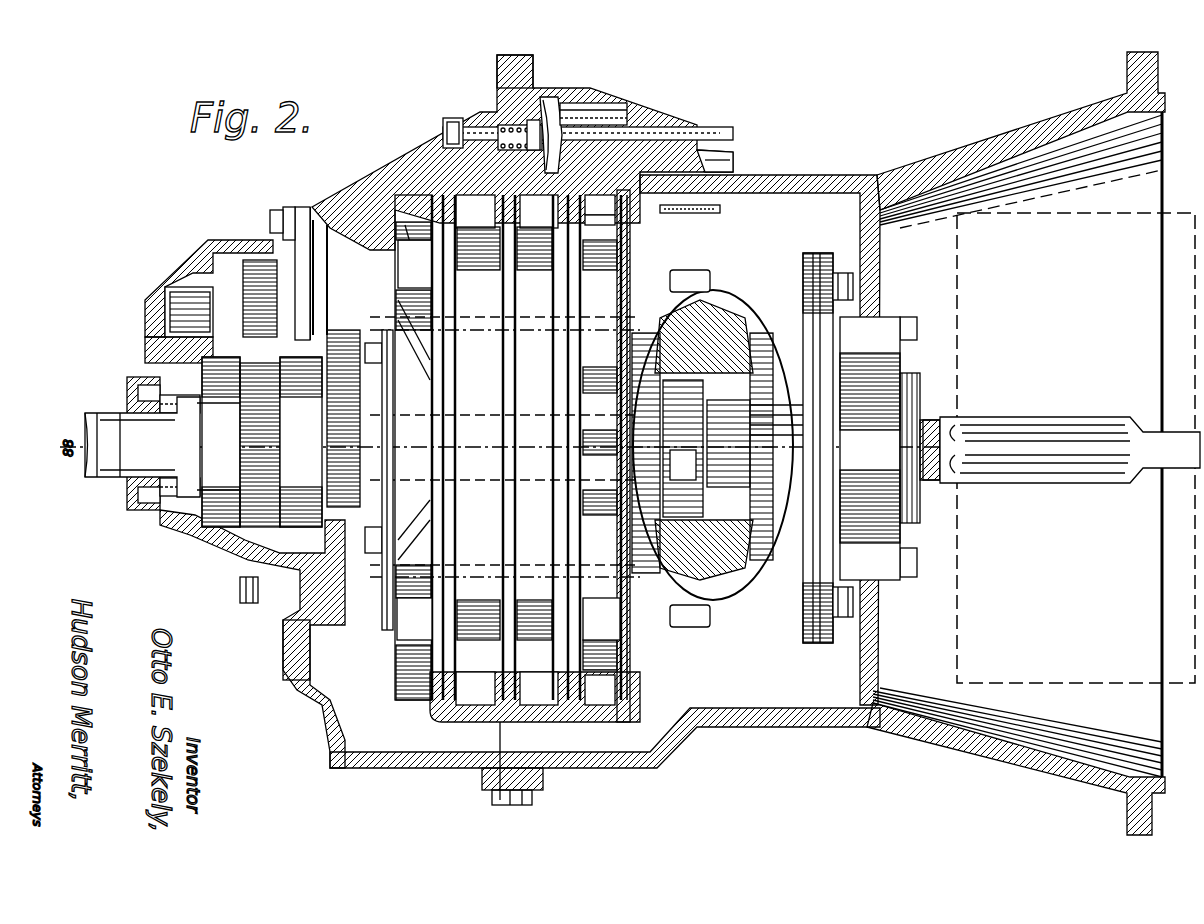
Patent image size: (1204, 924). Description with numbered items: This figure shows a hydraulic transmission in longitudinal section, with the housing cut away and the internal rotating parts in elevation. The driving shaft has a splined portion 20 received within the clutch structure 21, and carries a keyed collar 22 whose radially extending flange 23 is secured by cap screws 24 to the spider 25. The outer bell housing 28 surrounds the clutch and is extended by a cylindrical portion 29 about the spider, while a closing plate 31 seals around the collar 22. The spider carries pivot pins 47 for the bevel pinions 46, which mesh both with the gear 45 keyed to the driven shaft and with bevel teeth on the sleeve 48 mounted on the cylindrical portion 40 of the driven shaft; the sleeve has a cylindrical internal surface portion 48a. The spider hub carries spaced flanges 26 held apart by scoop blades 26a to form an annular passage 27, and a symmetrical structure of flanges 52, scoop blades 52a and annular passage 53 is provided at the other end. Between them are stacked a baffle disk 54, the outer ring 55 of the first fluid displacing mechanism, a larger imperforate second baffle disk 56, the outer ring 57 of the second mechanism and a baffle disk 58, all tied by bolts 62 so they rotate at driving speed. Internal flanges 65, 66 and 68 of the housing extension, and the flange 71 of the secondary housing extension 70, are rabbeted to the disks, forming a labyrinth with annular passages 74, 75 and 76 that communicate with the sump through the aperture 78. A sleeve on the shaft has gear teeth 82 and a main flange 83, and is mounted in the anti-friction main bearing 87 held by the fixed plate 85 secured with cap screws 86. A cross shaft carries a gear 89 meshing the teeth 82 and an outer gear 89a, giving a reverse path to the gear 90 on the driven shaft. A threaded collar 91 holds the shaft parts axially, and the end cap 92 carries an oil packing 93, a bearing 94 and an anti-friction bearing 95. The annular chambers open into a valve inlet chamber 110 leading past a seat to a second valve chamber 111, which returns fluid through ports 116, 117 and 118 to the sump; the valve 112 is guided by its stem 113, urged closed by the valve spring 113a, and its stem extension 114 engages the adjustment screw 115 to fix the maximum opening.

The splined portion 20 is at (1070, 428).
The clutch structure 21 is at (1058, 213).
The collar 22 is at (935, 420).
The radially extending flange 23 is at (815, 252).
The cap screws 24 is at (854, 287).
The spider 25 is at (802, 285).
The radially extending flanges 26 is at (586, 412).
The scoop blades 26a is at (632, 265).
The annular passage 27 is at (601, 619).
The bell housing 28 is at (1000, 145).
The cylindrical portion 29 is at (800, 176).
The closing plate 31 is at (905, 375).
The cylindrical portion 40 is at (142, 447).
The gear 45 is at (745, 445).
The bevel pinions 46 is at (705, 368).
The pivot pins 47 is at (690, 272).
The sleeve 48 is at (683, 448).
The cylindrical internal surface portion 48a is at (688, 452).
The radially extending flanges 52 is at (400, 230).
The scoop blades 52a is at (457, 325).
The annular passage 53 is at (414, 619).
The baffle disk 54 is at (565, 358).
The outer ring 55 is at (537, 447).
The second baffle disk 56 is at (568, 307).
The outer ring 57 is at (478, 505).
The baffle disk 58 is at (450, 305).
The bolts 62 is at (574, 447).
The internal flange 65 is at (631, 214).
The internal flange 66 is at (600, 450).
The internal flange 68 is at (522, 185).
The secondary housing extension 70 is at (345, 200).
The flange 71 is at (500, 722).
The annular passage 74 is at (615, 732).
The annular passage 75 is at (539, 450).
The annular passage 76 is at (475, 450).
The aperture 78 is at (650, 708).
The gear teeth 82 is at (372, 553).
The main flange 83 is at (384, 580).
The fixed plate 85 is at (289, 207).
The cap screws 86 is at (274, 210).
The anti-friction main bearing 87 is at (320, 428).
The gear 89 is at (302, 207).
The gear 89a is at (258, 265).
The gear 90 is at (218, 556).
The threaded collar 91 is at (165, 512).
The end cap 92 is at (140, 378).
The oil packing 93 is at (137, 392).
The bearing 94 is at (172, 300).
The anti-friction bearing 95 is at (238, 442).
The valve inlet chamber 110 is at (536, 75).
The second valve chamber 111 is at (612, 105).
The valve 112 is at (562, 108).
The valve stem 113 is at (727, 130).
The valve spring 113a is at (535, 120).
The stem extension 114 is at (500, 127).
The adjustment screw 115 is at (447, 122).
The port 116 is at (735, 160).
The port 117 is at (600, 178).
The ports 118 is at (405, 225).